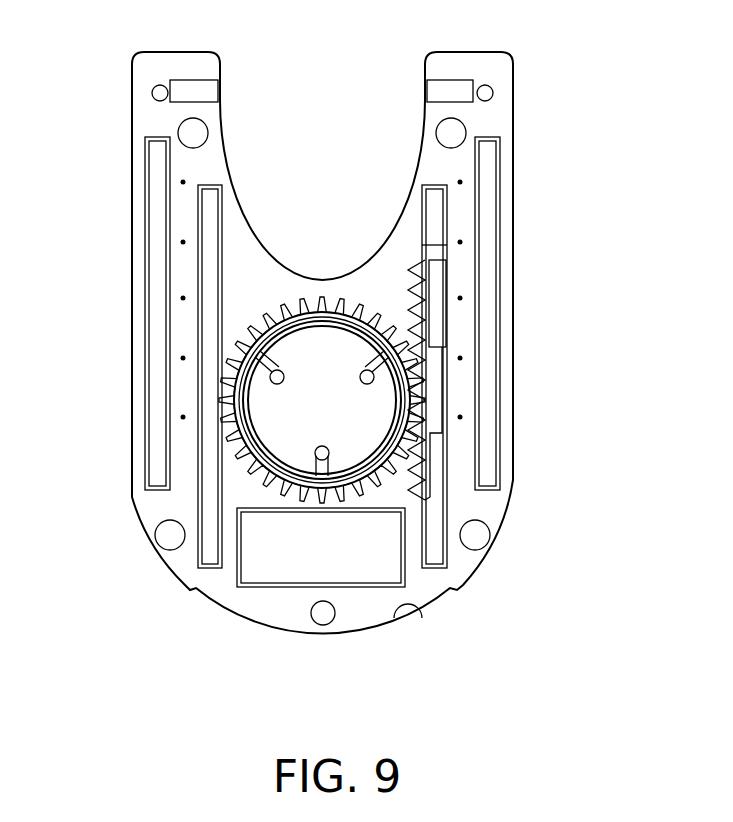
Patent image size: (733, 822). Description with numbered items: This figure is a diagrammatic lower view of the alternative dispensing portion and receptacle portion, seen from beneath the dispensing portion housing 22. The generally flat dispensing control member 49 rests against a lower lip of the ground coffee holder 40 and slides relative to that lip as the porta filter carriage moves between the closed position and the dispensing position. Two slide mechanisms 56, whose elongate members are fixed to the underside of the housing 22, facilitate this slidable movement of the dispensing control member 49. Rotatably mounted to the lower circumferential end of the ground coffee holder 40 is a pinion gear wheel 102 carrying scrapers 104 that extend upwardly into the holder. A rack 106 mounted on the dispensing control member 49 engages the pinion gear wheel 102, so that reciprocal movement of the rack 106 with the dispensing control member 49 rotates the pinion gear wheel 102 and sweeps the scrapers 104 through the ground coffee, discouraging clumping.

The dispensing portion housing 22 is at (502, 67).
The ground coffee holder 40 is at (330, 298).
The dispensing control member 49 is at (515, 423).
The slide mechanism 56 is at (150, 180).
The pinion gear wheel 102 is at (273, 314).
The scrapers 104 is at (357, 368).
The rack 106 is at (422, 285).